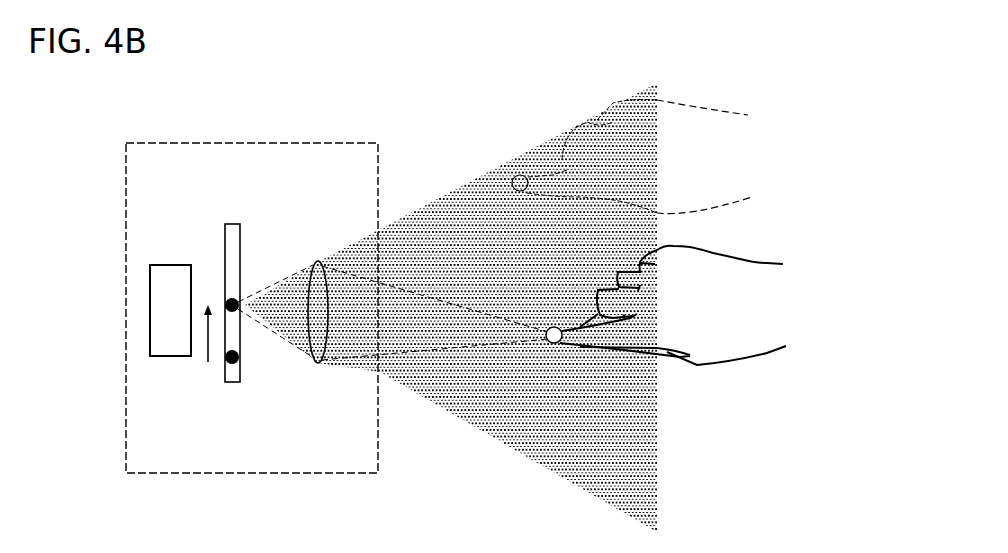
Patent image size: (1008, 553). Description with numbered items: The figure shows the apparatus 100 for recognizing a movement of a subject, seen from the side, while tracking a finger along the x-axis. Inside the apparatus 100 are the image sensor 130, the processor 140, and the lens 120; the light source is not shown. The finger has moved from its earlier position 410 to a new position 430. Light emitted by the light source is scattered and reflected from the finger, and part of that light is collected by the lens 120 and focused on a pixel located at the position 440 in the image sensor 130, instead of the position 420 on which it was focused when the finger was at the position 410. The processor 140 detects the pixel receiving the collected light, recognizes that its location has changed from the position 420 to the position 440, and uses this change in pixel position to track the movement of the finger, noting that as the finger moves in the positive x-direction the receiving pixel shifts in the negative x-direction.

The apparatus 100 is at (253, 143).
The lens 120 is at (332, 265).
The image sensor 130 is at (233, 223).
The processor 140 is at (170, 265).
The position of the finger 410 is at (513, 175).
The position in the image sensor 420 is at (226, 363).
The position of the finger 430 is at (552, 342).
The position in the image sensor 440 is at (238, 309).